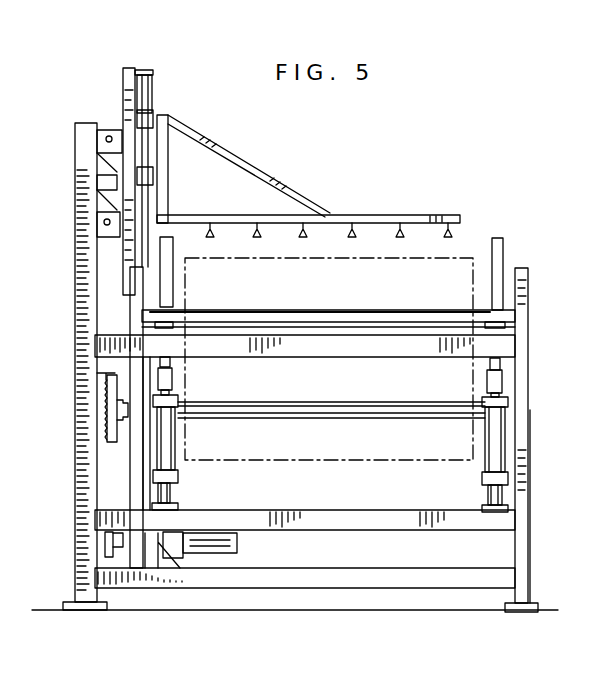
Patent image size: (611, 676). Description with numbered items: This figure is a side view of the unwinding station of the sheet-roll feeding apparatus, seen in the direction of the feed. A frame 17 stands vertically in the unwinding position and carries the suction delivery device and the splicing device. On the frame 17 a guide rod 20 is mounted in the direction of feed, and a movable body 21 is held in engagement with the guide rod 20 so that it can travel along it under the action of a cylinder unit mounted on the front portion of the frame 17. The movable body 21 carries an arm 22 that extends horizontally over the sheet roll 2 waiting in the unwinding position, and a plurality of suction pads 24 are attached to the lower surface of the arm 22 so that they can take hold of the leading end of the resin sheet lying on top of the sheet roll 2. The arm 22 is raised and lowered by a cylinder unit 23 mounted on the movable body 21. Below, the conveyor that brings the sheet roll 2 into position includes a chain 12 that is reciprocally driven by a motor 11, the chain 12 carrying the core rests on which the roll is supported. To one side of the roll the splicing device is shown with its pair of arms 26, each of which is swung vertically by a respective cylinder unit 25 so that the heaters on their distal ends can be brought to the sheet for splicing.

The sheet roll 2 is at (452, 277).
The motor 11 is at (215, 542).
The chain 12 is at (97, 372).
The frame 17 is at (83, 203).
The guide rod 20 is at (108, 135).
The movable body 21 is at (127, 83).
The arm 22 is at (342, 215).
The cylinder unit 23 is at (150, 98).
The suction pads 24 is at (213, 233).
The cylinder units 25 is at (163, 447).
The arms 26 is at (497, 253).